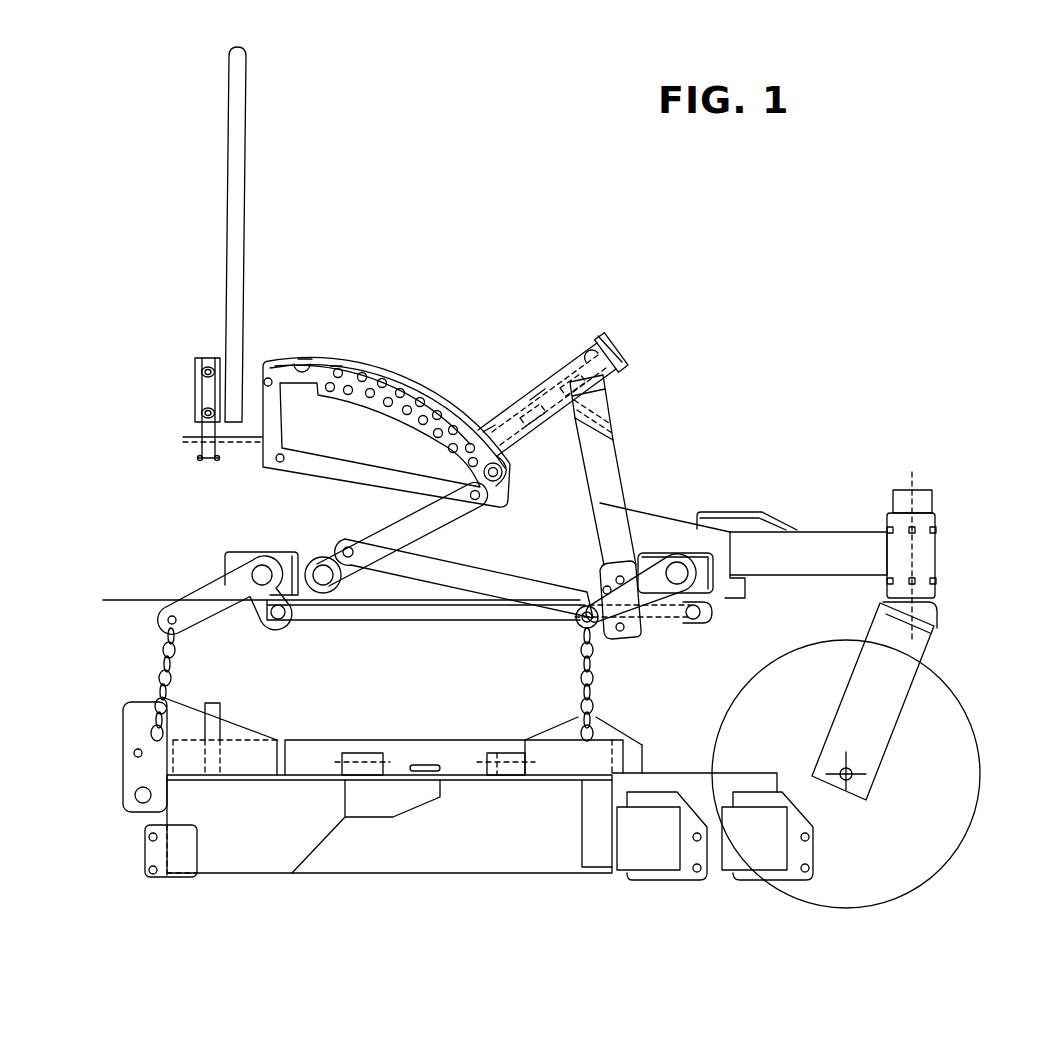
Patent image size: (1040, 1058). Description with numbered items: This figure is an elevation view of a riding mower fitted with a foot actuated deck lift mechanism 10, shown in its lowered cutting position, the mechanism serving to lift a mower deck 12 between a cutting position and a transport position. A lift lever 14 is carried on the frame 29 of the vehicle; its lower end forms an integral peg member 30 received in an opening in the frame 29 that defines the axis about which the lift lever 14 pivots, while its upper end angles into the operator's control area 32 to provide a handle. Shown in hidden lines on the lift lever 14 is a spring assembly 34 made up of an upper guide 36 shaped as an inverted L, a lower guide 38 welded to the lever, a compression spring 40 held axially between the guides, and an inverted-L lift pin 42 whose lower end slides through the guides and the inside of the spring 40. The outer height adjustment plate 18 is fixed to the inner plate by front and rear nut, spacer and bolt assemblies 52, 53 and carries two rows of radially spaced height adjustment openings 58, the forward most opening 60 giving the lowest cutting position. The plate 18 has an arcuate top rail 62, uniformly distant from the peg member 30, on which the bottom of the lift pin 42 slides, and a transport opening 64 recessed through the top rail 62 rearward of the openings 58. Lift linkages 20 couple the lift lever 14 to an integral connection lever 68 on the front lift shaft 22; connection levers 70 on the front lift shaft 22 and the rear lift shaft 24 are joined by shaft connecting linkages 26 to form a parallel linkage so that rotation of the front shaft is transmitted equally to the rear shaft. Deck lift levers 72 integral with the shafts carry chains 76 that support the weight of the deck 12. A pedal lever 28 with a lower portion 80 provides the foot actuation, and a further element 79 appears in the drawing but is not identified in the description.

The deck lift mechanism 10 is at (797, 278).
The mower deck 12 is at (243, 878).
The lift lever 14 is at (370, 520).
The outer height adjustment plate 18 is at (327, 478).
The lift linkages 20 is at (484, 568).
The front lift shaft 22 is at (703, 550).
The rear lift shaft 24 is at (258, 568).
The shaft connecting linkages 26 is at (428, 623).
The pedal lever 28 is at (620, 460).
The frame 29 is at (670, 505).
The peg member 30 is at (328, 583).
The operator's control area 32 is at (463, 312).
The spring assembly 34 is at (561, 345).
The upper guide 36 is at (548, 393).
The lower guide 38 is at (487, 428).
The spring 40 is at (538, 395).
The lift pin 42 is at (585, 365).
The front nut, spacer and bolt assembly 52 is at (506, 473).
The rear nut, spacer and bolt assembly 53 is at (268, 378).
The height adjustment openings 58 is at (420, 398).
The forward most opening 60 is at (471, 502).
The arcuate top rail 62 is at (338, 366).
The transport opening 64 is at (304, 358).
The integral connection lever 68 is at (720, 590).
The integral connection levers 70 is at (265, 616).
The deck lift levers 72 is at (212, 618).
The chains 76 is at (140, 653).
The pivot 79 is at (597, 570).
The lower portion 80 is at (607, 393).